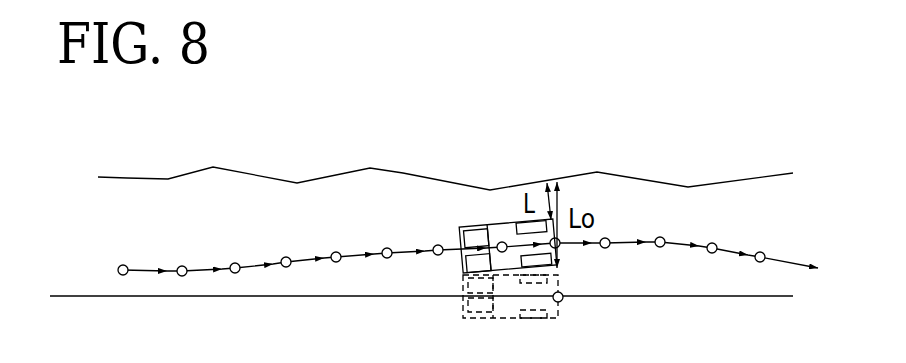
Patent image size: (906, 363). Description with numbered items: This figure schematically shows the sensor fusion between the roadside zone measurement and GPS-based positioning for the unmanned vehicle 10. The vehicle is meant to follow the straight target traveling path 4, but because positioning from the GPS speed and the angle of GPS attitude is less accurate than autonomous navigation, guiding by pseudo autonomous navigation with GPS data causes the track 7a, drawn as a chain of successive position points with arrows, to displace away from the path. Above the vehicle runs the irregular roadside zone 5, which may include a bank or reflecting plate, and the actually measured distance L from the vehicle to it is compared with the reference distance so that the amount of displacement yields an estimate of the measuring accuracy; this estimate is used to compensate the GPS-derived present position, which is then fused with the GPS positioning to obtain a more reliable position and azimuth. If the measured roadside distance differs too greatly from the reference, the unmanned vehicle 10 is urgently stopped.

The target traveling path 4 is at (418, 296).
The roadside zone 5 is at (402, 172).
The track 7a is at (348, 255).
The unmanned vehicle 10 is at (492, 223).